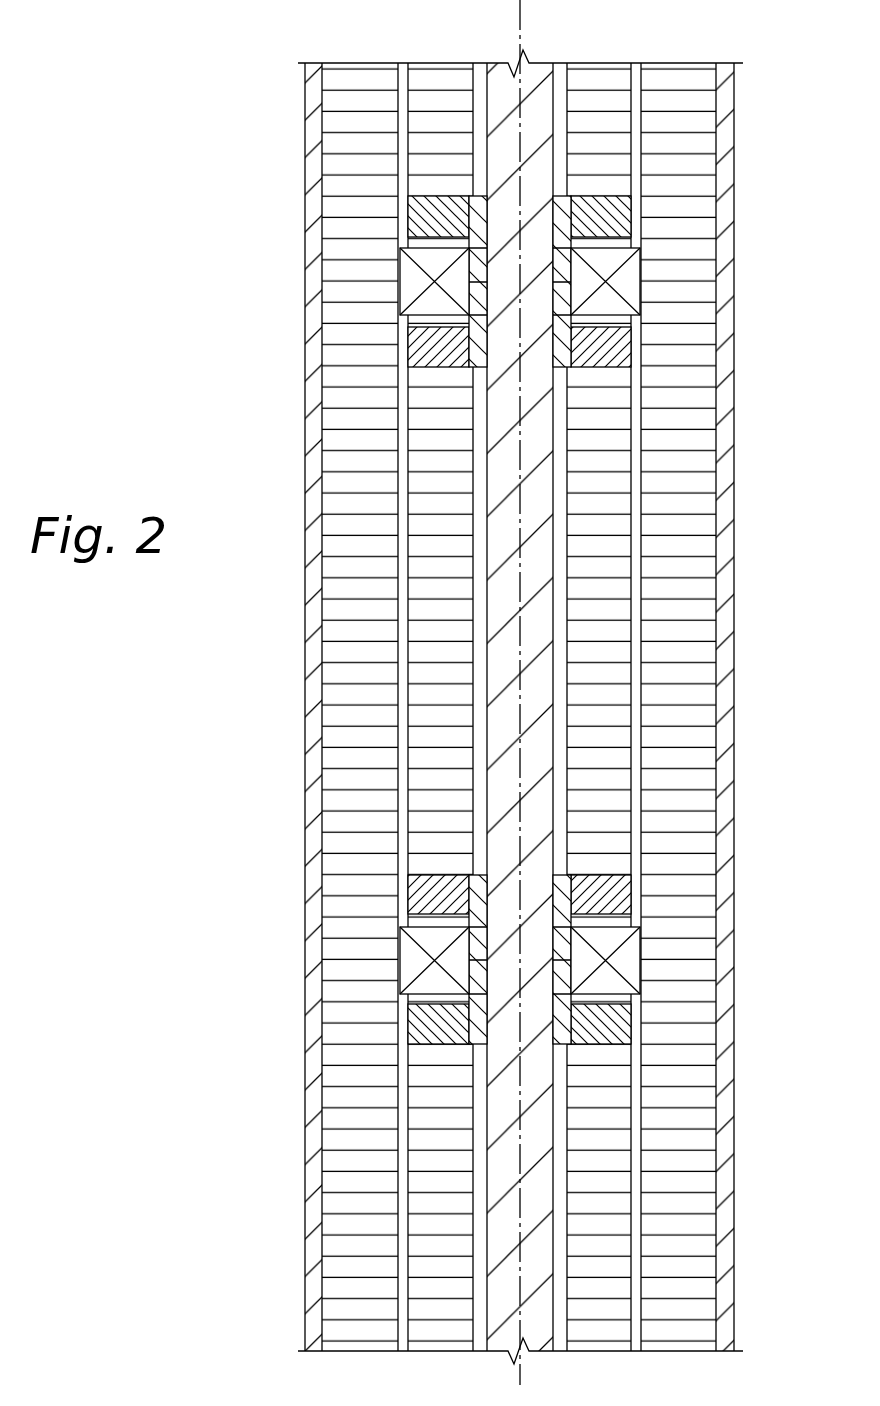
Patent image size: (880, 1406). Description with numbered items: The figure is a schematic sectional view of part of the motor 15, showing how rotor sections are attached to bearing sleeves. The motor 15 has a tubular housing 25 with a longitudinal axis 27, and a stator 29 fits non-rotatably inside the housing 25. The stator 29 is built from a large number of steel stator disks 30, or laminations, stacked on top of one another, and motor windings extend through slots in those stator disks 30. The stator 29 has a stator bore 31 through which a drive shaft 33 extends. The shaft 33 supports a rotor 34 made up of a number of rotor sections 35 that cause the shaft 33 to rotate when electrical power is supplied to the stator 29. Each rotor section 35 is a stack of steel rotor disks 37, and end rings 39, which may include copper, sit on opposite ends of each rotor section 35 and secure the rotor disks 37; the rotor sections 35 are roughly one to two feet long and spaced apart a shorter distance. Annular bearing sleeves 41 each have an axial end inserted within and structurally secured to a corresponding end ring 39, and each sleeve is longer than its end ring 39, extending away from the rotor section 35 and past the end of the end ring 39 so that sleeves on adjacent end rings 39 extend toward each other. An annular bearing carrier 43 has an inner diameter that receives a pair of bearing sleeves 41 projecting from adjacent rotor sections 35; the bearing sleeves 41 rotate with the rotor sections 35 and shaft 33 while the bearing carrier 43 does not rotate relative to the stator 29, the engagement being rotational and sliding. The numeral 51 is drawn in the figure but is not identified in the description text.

The motor 15 is at (142, 334).
The tubular housing 25 is at (736, 386).
The longitudinal axis 27 is at (522, 13).
The stator 29 is at (718, 440).
The stator disks 30 is at (708, 507).
The stator bore 31 is at (640, 610).
The drive shaft 33 is at (540, 658).
The rotor 34 is at (628, 98).
The rotor sections 35 is at (611, 126).
The rotor disks 37 is at (622, 170).
The end rings 39 is at (605, 218).
The bearing sleeves 41 is at (560, 268).
The bearing carrier 43 is at (410, 275).
The seal ring 51 is at (478, 268).